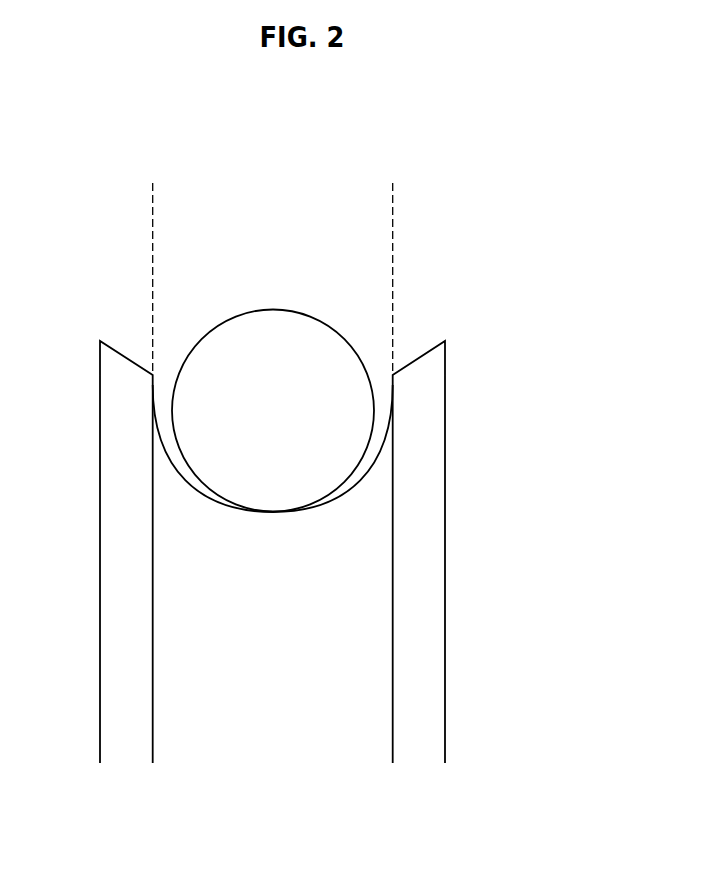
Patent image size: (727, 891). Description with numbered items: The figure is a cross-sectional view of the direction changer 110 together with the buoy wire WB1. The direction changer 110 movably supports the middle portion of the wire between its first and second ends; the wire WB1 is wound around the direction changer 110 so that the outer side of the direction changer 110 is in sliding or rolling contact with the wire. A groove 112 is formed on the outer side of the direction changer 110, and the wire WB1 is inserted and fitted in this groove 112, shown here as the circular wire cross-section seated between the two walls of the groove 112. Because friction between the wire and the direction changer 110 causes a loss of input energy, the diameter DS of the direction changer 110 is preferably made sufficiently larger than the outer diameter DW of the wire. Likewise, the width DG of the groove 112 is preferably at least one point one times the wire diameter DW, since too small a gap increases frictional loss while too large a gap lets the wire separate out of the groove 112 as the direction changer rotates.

The direction changer 110 is at (435, 592).
The groove 112 is at (390, 380).
The wire ball / ball WB1 is at (217, 348).
The width of the groove DG is at (153, 230).
The outer diameter of the wire DW is at (172, 410).
The diameter of the direction changer DS is at (273, 512).